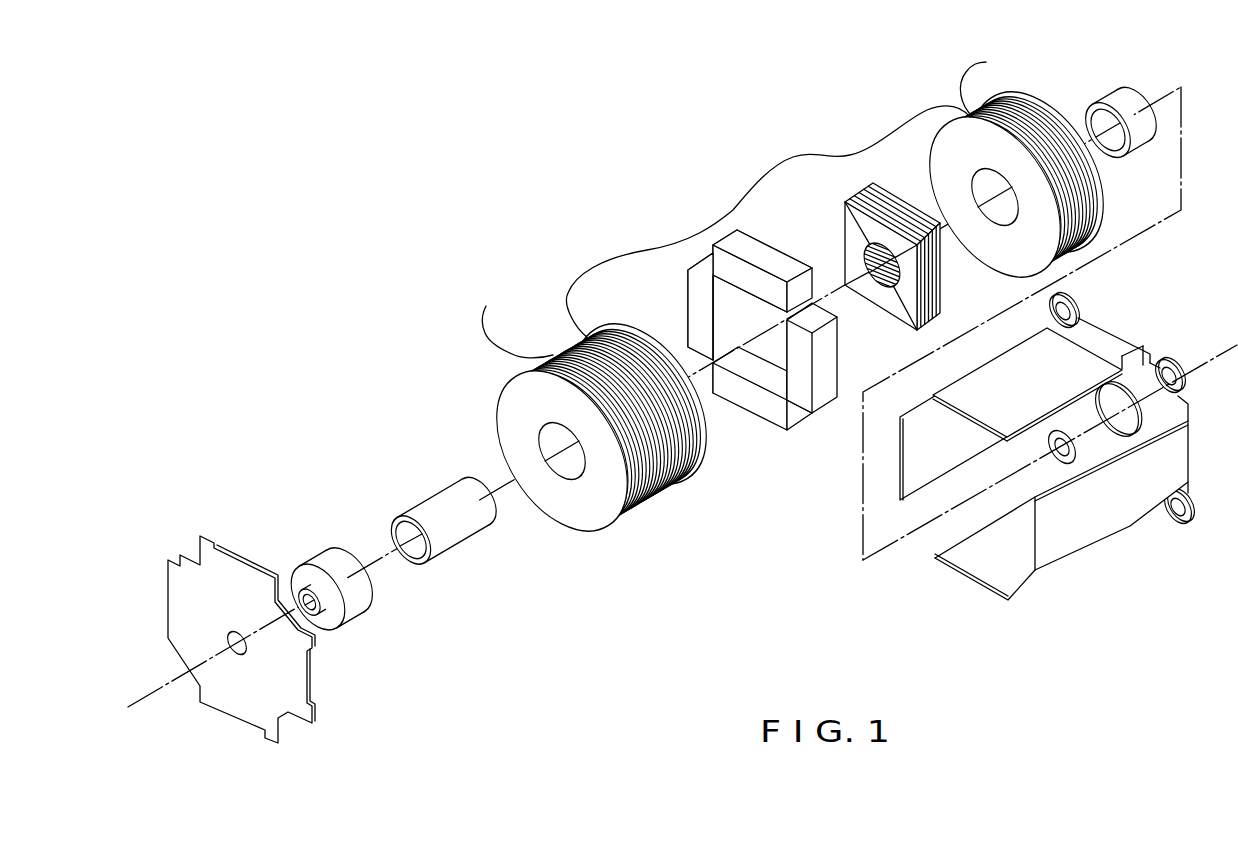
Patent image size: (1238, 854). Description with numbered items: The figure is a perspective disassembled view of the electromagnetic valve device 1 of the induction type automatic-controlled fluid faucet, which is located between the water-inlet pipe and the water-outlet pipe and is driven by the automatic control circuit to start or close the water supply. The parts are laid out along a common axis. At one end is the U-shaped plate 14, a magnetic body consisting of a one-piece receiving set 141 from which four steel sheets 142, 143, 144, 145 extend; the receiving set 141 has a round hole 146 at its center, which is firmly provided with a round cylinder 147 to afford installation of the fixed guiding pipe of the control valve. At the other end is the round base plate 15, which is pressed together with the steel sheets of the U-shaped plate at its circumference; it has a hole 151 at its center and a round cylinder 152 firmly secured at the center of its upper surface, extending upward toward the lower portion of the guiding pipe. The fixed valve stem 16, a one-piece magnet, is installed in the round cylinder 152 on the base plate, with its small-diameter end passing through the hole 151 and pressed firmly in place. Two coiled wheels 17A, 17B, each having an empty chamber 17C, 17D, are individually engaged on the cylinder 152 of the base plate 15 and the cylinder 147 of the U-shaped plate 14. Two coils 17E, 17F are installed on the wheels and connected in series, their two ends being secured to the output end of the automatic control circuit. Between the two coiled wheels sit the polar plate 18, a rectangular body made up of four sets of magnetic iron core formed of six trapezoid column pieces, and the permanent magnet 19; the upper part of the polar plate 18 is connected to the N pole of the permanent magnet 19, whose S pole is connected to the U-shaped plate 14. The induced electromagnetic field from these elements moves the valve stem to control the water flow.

The electromagnetic valve device 1 is at (682, 411).
The U-shaped plate 14 is at (1050, 466).
The receiving set 141 is at (1138, 397).
The steel sheet 142 is at (1077, 355).
The steel sheet 143 is at (918, 463).
The steel sheet 144 is at (1000, 580).
The steel sheet 145 is at (1103, 525).
The round hole 146 is at (1152, 360).
The round cylinder 147 is at (1128, 102).
The base plate 15 is at (241, 651).
The hole 151 is at (232, 647).
The round cylinder 152 is at (445, 543).
The fixed valve stem 16 is at (343, 598).
The coiled wheel 17A is at (602, 437).
The coiled wheel 17B is at (1040, 184).
The empty chamber 17C is at (568, 468).
The empty chamber 17D is at (998, 208).
The coil 17E is at (510, 327).
The coil 17F is at (993, 86).
The polar plate 18 is at (873, 225).
The permanent magnet 19 is at (760, 408).